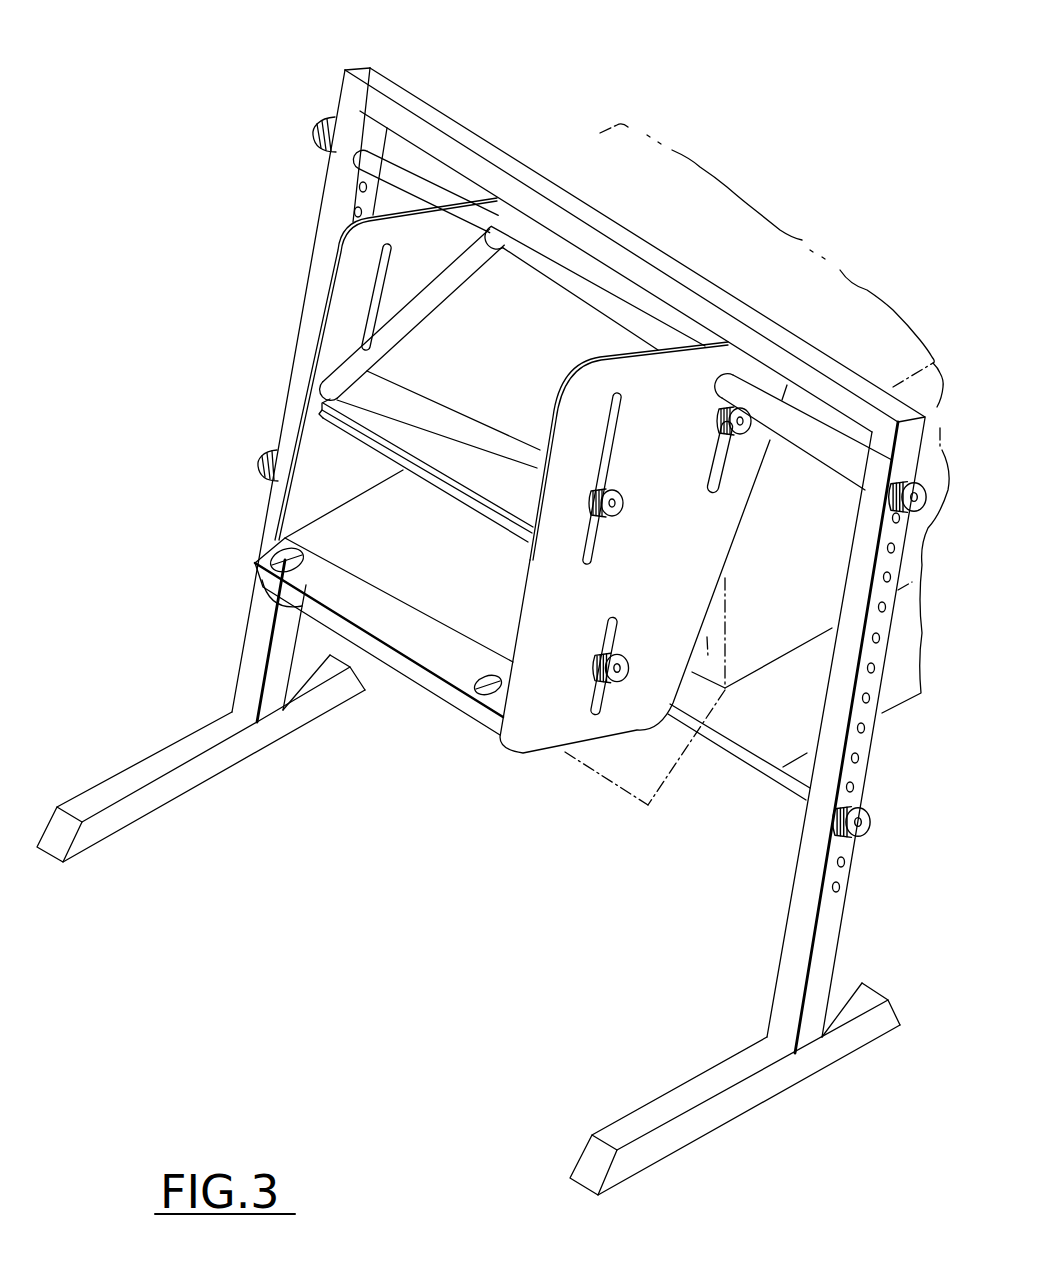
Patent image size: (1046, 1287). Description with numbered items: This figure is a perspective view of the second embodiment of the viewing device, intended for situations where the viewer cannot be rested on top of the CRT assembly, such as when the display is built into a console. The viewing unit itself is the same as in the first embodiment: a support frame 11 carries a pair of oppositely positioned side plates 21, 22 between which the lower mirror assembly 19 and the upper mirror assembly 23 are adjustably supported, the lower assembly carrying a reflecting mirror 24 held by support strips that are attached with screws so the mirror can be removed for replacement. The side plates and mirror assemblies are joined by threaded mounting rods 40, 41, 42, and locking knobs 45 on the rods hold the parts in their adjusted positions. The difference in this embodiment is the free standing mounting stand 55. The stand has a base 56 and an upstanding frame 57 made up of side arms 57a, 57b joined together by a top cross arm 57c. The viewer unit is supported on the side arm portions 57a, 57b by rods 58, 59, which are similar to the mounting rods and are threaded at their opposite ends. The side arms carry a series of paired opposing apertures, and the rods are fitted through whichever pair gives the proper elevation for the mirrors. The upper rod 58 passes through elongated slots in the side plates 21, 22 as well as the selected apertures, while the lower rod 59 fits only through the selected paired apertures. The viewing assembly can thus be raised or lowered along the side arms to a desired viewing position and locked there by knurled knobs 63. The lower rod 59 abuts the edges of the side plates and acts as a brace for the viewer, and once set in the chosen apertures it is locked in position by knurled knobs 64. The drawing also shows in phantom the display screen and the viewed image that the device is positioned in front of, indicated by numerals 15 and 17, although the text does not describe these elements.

The support frame 11 is at (497, 770).
The cutting board 15 is at (703, 640).
The food product 17 is at (768, 245).
The mirror assembly 19 is at (495, 451).
The side plate 21 is at (742, 552).
The side plate 22 is at (343, 267).
The mirror assembly 23 is at (341, 331).
The reflecting mirror 24 is at (440, 605).
The mounting rod 40 is at (447, 398).
The mounting rod 41 is at (537, 318).
The mounting rod 42 is at (623, 664).
The locking knob 45 is at (641, 554).
The mounting stand 55 is at (468, 914).
The base 56 is at (140, 805).
The upstanding frame 57 is at (563, 547).
The side arm 57a is at (833, 913).
The side arm 57b is at (257, 605).
The top cross arm 57c is at (403, 95).
The rod 58 is at (818, 452).
The rod 59 is at (727, 767).
The knurled knob 63 is at (320, 123).
The knurled knob 64 is at (270, 448).